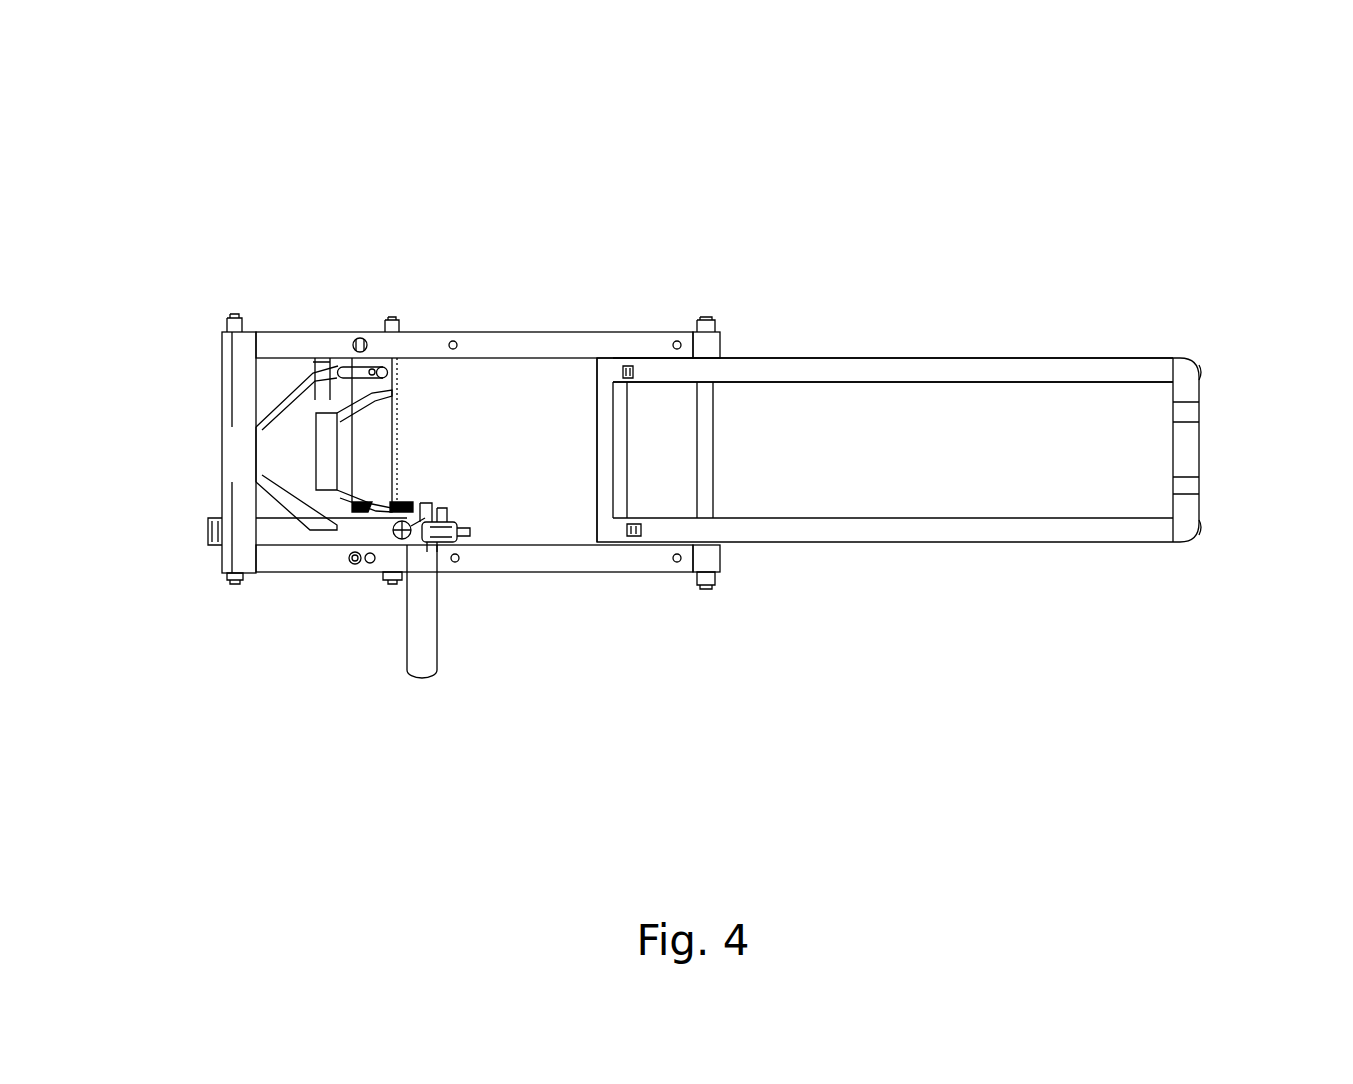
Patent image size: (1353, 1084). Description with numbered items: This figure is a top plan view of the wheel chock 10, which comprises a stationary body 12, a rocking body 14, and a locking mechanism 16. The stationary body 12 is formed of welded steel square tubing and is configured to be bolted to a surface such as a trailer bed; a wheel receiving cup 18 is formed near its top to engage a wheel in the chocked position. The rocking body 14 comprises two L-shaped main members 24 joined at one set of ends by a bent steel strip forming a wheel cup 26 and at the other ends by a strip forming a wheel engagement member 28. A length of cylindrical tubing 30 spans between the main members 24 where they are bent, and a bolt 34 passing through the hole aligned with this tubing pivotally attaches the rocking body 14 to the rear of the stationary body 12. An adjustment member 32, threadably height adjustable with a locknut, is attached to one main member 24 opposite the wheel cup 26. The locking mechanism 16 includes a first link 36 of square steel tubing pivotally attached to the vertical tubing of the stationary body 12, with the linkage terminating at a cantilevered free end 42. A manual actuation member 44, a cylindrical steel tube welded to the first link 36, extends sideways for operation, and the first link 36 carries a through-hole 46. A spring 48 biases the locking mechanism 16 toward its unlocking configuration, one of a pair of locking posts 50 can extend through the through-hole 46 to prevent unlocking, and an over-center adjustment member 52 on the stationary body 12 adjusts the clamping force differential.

The wheel chock 10 is at (446, 154).
The stationary body 12 is at (496, 340).
The rocking body 14 is at (872, 370).
The locking mechanism 16 is at (346, 540).
The wheel receiving cup 18 is at (233, 458).
The main members 24 is at (960, 368).
The wheel cup 26 is at (1185, 450).
The wheel engagement member 28 is at (605, 448).
The cylindrical tubing 30 is at (715, 448).
The adjustment member 32 is at (641, 528).
The bolt 34 is at (705, 583).
The first link 36 is at (270, 538).
The free end 42 is at (470, 531).
The manual actuation member 44 is at (418, 630).
The through-hole 46 is at (412, 526).
The spring 48 is at (396, 502).
The locking posts 50 is at (338, 368).
The over-center adjustment member 52 is at (373, 563).